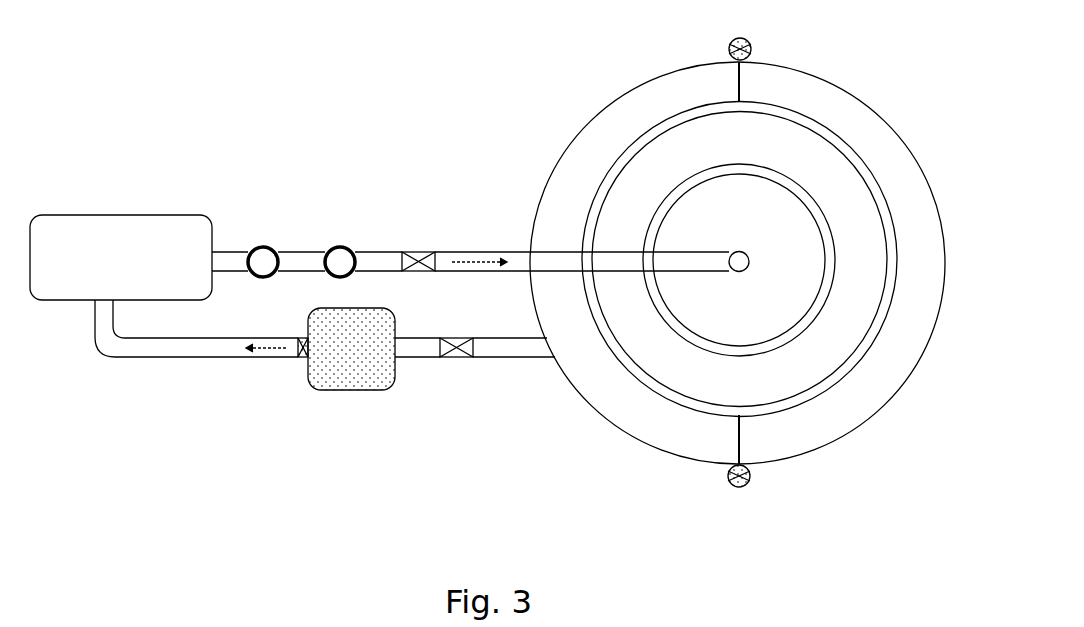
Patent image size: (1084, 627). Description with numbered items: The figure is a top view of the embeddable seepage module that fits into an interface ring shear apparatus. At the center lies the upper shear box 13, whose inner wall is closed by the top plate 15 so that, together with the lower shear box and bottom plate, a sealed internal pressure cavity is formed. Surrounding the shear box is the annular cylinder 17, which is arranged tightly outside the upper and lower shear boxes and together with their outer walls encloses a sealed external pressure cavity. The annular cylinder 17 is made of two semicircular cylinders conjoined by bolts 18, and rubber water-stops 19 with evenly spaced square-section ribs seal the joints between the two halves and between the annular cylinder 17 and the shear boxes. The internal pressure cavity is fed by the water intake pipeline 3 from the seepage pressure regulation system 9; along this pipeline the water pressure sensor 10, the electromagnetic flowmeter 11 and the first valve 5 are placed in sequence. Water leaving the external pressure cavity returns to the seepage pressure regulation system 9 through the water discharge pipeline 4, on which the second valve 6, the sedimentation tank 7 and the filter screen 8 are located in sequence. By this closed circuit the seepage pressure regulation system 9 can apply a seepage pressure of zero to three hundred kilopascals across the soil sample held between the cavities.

The water intake pipeline 3 is at (480, 253).
The water discharge pipeline 4 is at (325, 343).
The first valve 5 is at (418, 245).
The second valve 6 is at (456, 364).
The sedimentation tank 7 is at (351, 349).
The filter screen 8 is at (300, 352).
The seepage pressure regulation system 9 is at (121, 257).
The water pressure sensor 10 is at (341, 247).
The electromagnetic flowmeter 11 is at (263, 247).
The upper shear box 13 is at (739, 259).
The top plate 15 is at (739, 260).
The annular cylinder 17 is at (737, 263).
The bolt 18 is at (739, 464).
The water-stop 19 is at (733, 85).